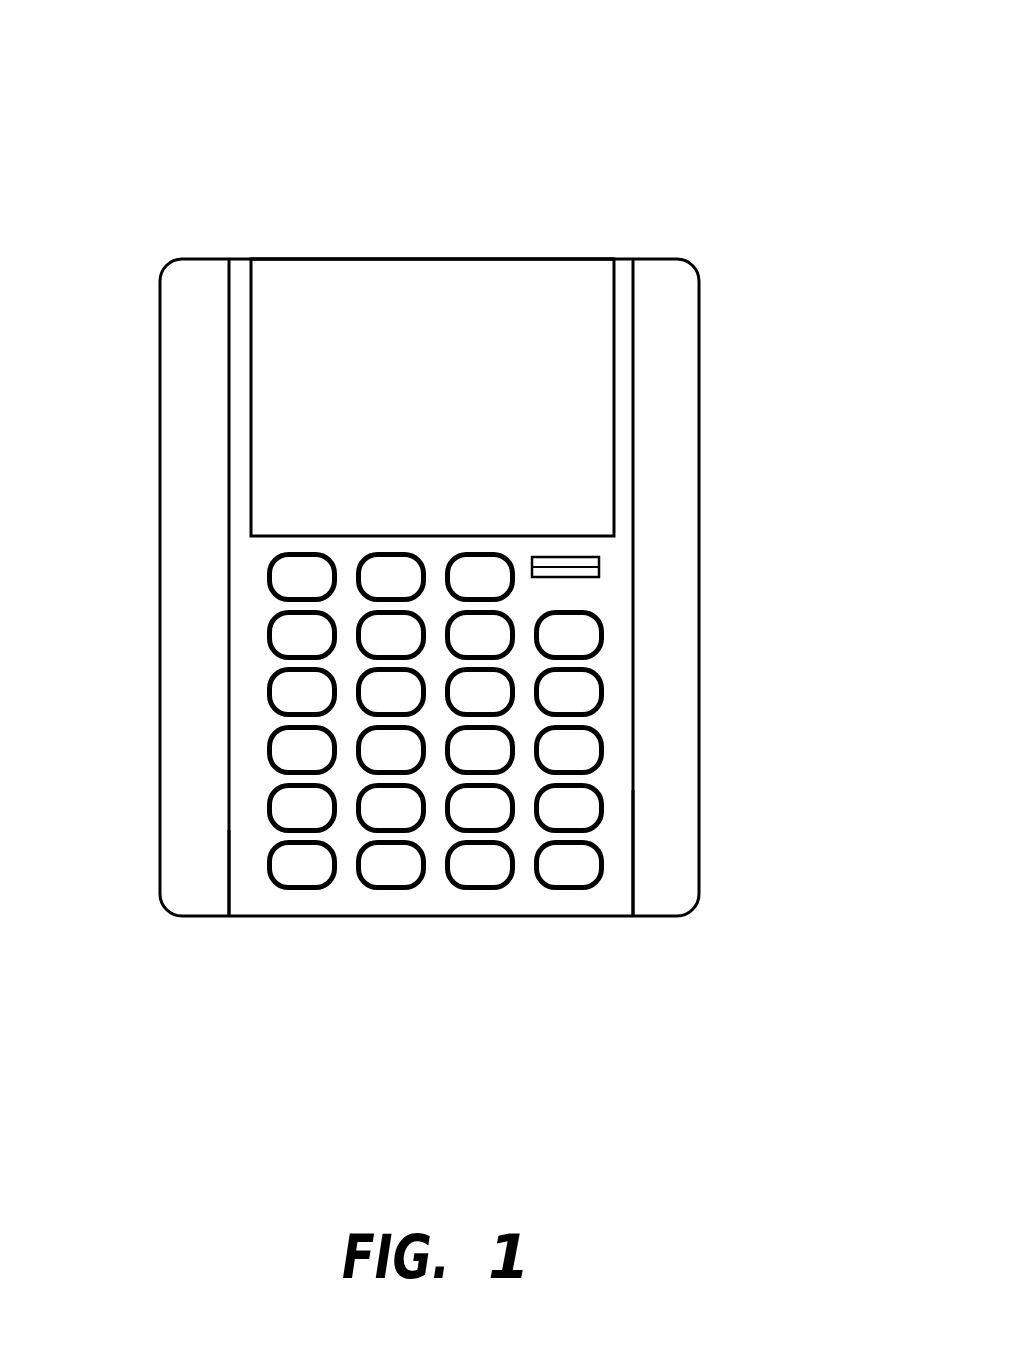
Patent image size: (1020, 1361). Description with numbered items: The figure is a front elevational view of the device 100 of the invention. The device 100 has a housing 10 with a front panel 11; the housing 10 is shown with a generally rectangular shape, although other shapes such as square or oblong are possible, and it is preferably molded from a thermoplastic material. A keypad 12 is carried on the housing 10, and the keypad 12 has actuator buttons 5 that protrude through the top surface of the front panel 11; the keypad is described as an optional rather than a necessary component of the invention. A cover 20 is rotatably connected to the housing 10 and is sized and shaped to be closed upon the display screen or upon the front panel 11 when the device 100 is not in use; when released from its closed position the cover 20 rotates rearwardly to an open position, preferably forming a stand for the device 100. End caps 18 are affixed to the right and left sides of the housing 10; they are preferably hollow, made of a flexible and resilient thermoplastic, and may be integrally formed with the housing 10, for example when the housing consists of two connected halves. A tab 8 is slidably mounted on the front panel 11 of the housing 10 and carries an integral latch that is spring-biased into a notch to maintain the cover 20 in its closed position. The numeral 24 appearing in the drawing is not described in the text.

The device 100 is at (728, 140).
The cover 20 is at (532, 368).
The display screen area 24 is at (334, 277).
The end caps 18 is at (649, 500).
The front panel 11 is at (247, 567).
The keypad 12 is at (260, 843).
The housing 10 is at (613, 835).
The tab 8 is at (585, 562).
The actuator buttons 5 is at (275, 732).